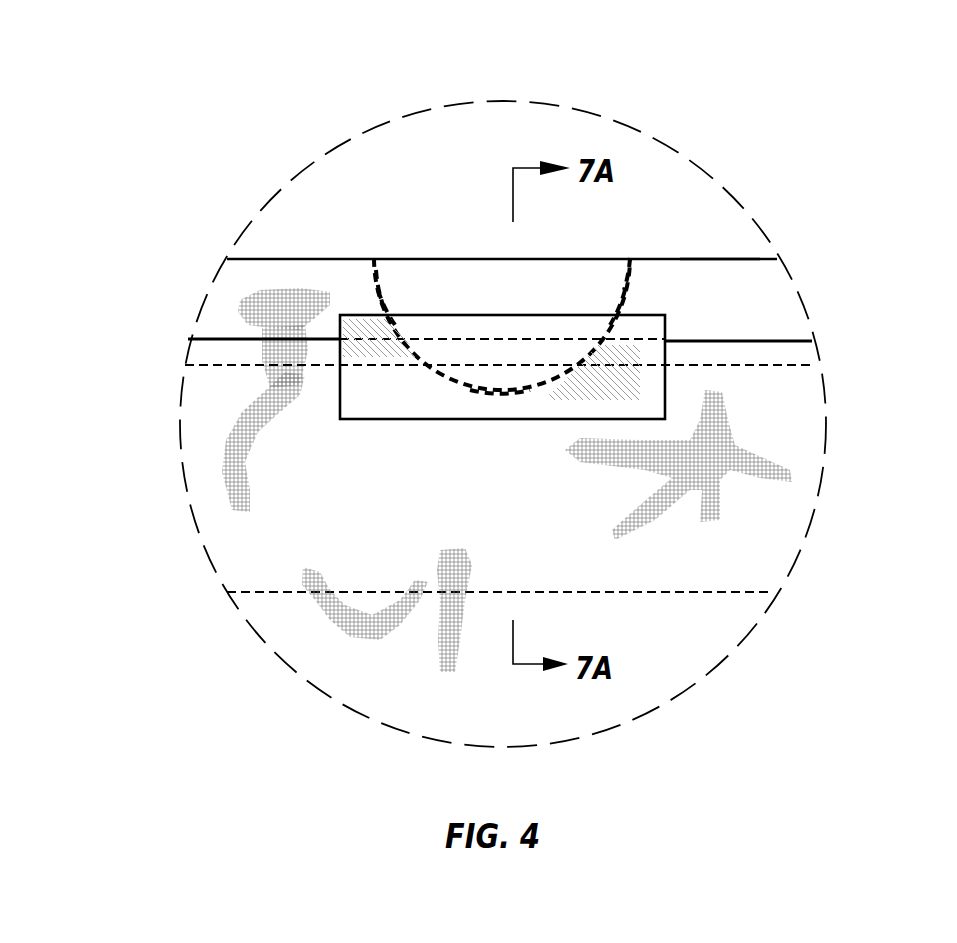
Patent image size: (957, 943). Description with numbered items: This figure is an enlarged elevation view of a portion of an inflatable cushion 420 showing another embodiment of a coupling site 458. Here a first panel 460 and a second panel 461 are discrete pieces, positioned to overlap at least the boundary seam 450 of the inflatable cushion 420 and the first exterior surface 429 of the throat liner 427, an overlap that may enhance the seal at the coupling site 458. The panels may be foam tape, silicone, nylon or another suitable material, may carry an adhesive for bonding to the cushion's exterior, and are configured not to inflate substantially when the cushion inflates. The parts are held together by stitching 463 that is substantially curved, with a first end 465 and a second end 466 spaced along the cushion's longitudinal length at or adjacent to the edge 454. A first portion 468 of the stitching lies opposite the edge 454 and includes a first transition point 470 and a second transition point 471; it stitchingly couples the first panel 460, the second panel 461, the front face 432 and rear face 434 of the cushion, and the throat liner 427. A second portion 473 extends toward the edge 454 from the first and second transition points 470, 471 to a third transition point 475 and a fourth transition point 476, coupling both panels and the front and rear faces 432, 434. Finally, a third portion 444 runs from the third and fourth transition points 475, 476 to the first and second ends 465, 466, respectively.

The inflatable cushion 420 is at (370, 660).
The throat liner 427 is at (727, 557).
The first exterior surface 429 is at (785, 367).
The front face 432 is at (770, 307).
The rear face 434 is at (760, 328).
The third portion 444 is at (630, 287).
The boundary seam 450 is at (250, 338).
The edge 454 is at (692, 258).
The coupling site 458 is at (637, 210).
The first panel 460 is at (648, 398).
The second panel 461 is at (620, 403).
The stitching 463 is at (377, 293).
The first end 465 is at (374, 258).
The second end 466 is at (630, 258).
The first portion 468 is at (500, 392).
The first transition point 470 is at (427, 365).
The second transition point 471 is at (578, 365).
The second portion 473 is at (412, 355).
The third transition point 475 is at (390, 315).
The fourth transition point 476 is at (615, 316).